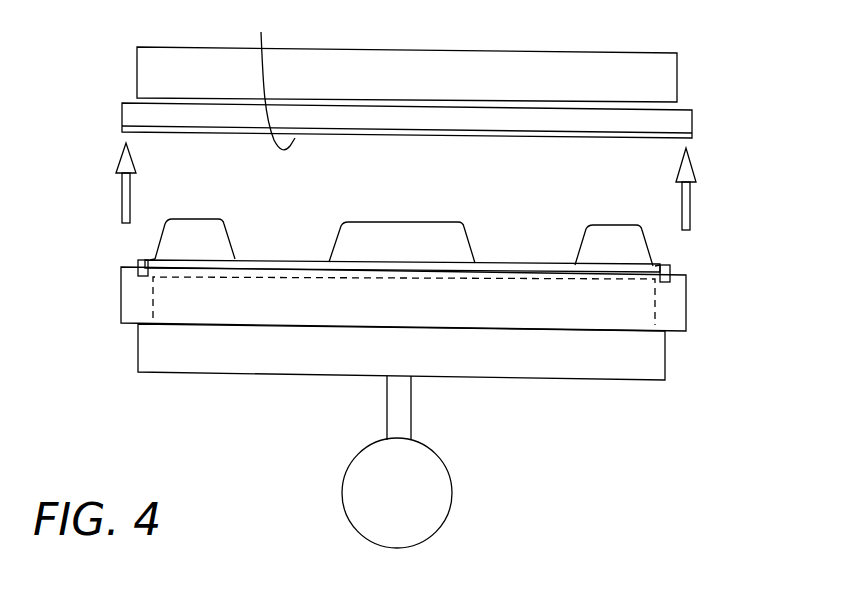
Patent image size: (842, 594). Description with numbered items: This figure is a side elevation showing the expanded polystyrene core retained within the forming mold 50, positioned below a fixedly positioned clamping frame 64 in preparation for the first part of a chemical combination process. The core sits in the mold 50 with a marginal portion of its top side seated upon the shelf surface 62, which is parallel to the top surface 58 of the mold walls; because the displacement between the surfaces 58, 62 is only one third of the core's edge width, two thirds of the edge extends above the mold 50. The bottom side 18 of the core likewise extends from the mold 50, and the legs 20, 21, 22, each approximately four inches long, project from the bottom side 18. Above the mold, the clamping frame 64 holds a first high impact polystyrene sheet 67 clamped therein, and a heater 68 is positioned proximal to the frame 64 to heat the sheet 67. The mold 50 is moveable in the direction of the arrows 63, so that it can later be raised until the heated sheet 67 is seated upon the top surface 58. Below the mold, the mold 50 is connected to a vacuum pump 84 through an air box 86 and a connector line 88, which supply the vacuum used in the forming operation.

The heater 68 is at (666, 77).
The clamping frame 64 is at (124, 117).
The first high impact polystyrene sheet 67 is at (270, 79).
The arrows 63 is at (122, 188).
The leg 20 is at (188, 232).
The leg 21 is at (404, 235).
The leg 22 is at (620, 236).
The bottom side 18 is at (268, 260).
The top surface 58 is at (137, 264).
The shelf surface 62 is at (150, 258).
The forming mold 50 is at (685, 307).
The air box 86 is at (664, 358).
The connector line 88 is at (407, 417).
The vacuum pump 84 is at (437, 470).